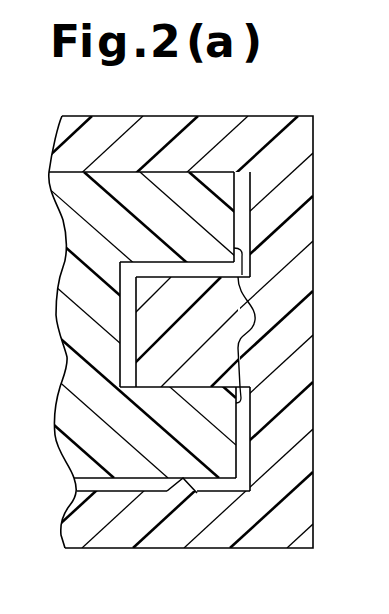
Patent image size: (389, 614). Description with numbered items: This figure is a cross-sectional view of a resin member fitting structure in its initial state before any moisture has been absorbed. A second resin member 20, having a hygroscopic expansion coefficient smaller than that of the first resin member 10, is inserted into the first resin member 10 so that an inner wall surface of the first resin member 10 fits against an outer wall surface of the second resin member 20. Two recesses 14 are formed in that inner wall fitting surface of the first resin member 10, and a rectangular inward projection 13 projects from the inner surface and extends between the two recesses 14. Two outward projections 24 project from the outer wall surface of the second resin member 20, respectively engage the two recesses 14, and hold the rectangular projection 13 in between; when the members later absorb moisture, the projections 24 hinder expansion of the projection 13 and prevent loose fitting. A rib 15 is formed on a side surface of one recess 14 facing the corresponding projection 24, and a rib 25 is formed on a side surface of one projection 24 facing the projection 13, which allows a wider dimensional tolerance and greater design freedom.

The first resin member 10 is at (208, 128).
The second resin member 20 is at (82, 326).
The projection 13 is at (150, 365).
The recess 14 is at (242, 224).
The projection 24 is at (256, 320).
The rib 25 is at (180, 263).
The rib 15 is at (167, 493).